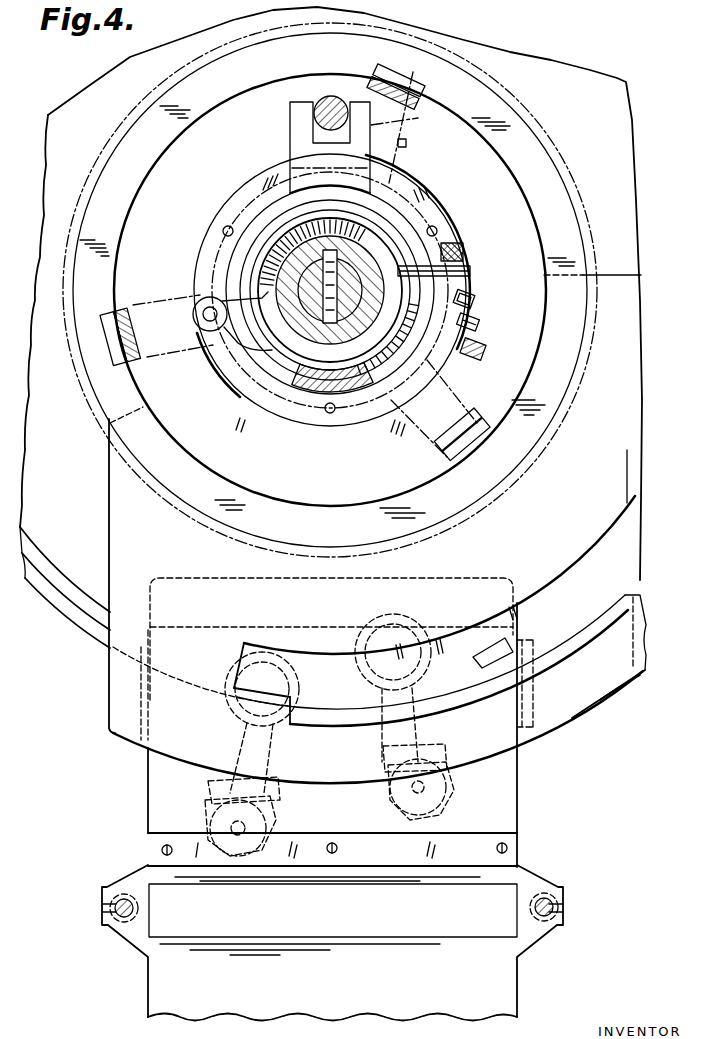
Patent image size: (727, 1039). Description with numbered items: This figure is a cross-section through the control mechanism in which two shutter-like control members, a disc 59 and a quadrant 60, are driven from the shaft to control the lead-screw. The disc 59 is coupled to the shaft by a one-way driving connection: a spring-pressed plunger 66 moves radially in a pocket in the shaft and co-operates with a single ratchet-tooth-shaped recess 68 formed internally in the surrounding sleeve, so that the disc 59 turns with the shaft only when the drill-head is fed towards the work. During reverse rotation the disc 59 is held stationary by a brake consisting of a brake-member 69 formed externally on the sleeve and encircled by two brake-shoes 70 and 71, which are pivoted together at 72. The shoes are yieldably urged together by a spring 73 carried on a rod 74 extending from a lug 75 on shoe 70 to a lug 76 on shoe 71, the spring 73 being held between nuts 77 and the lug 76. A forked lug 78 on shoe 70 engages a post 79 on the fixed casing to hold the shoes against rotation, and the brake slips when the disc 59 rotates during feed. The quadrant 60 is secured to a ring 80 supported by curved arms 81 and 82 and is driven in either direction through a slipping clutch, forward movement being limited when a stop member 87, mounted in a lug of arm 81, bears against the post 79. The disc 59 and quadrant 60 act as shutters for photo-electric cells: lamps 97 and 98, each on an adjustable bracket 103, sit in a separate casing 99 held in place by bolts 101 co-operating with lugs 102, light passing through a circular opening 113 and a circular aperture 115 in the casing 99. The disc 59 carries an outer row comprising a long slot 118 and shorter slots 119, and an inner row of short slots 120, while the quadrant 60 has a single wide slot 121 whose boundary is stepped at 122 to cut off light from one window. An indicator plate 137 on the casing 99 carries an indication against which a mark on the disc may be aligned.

The disc 59 is at (545, 75).
The quadrant 60 is at (108, 690).
The spring-pressed plunger 66 is at (334, 250).
The recess 68 is at (380, 215).
The brake-member 69 is at (300, 394).
The brake-shoe 70 is at (246, 232).
The brake-shoe 71 is at (254, 355).
The pivot 72 is at (203, 320).
The spring 73 is at (472, 305).
The rod 74 is at (482, 352).
The lug 75 is at (464, 249).
The lug 76 is at (470, 275).
The nuts 77 is at (476, 332).
The forked lug 78 is at (290, 118).
The post 79 is at (332, 96).
The ring 80 is at (524, 135).
The curved arm 81 is at (390, 82).
The curved arm 82 is at (130, 314).
The stop member 87 is at (384, 130).
The electric lamp 97 is at (240, 729).
The electric lamp 98 is at (377, 621).
The casing 99 is at (502, 772).
The bolts 101 is at (112, 908).
The lugs 102 is at (115, 888).
The adjustable bracket 103 is at (276, 815).
The circular opening 113 is at (238, 712).
The circular aperture 115 is at (371, 641).
The long slot 118 is at (62, 572).
The shorter slots 119 is at (476, 657).
The short slots 120 is at (507, 610).
The slot 121 is at (541, 580).
The step 122 is at (292, 694).
The indicator plate 137 is at (578, 720).